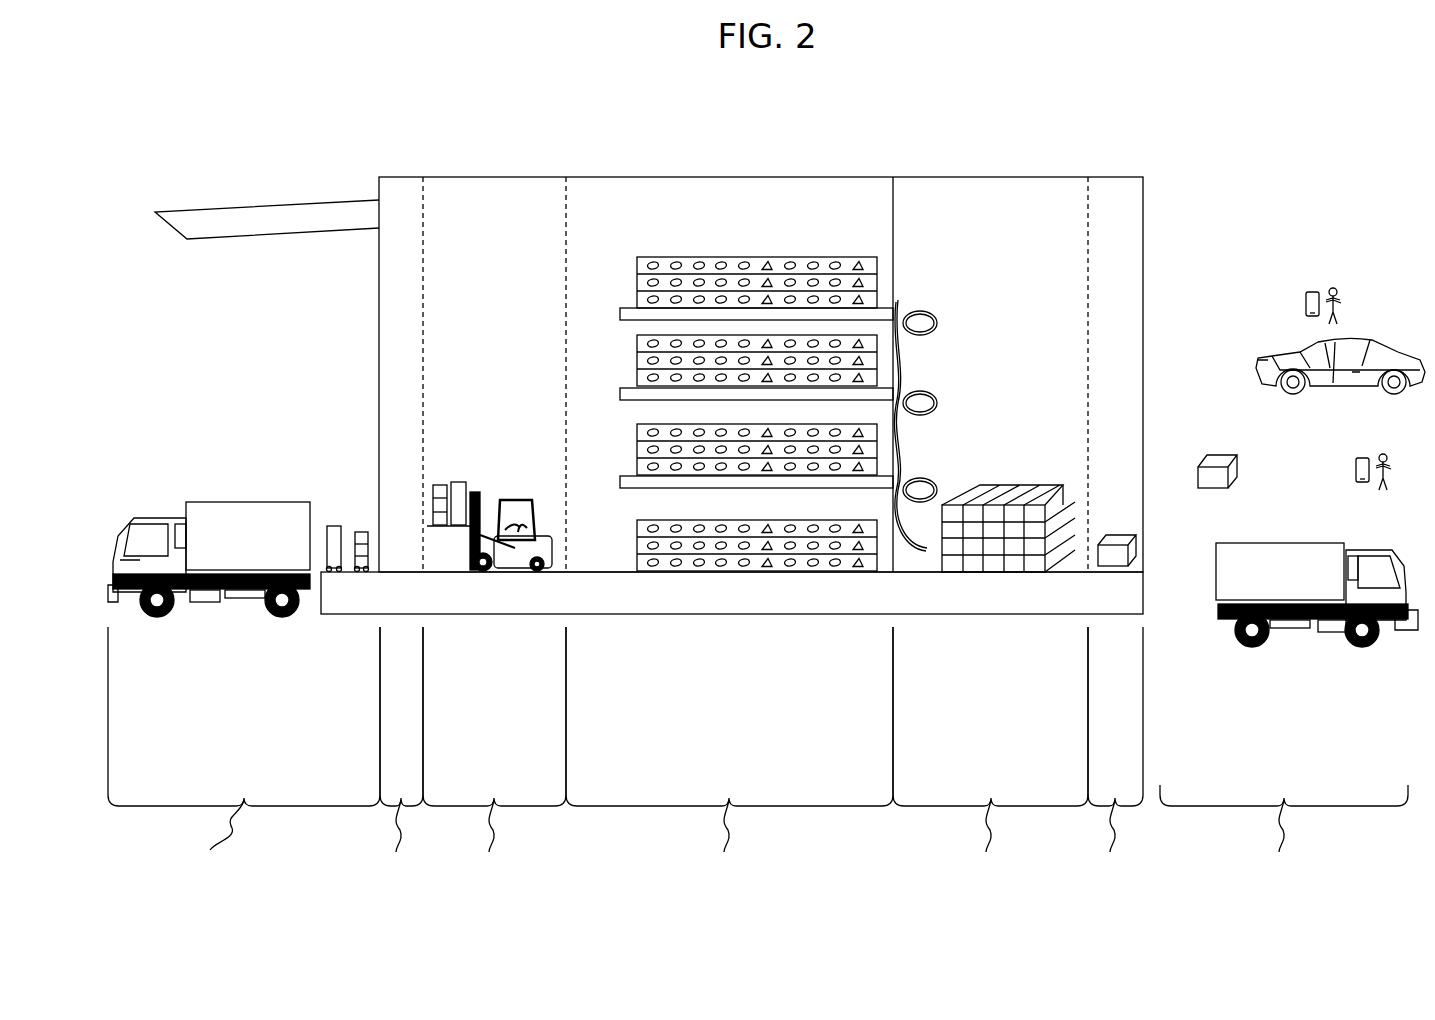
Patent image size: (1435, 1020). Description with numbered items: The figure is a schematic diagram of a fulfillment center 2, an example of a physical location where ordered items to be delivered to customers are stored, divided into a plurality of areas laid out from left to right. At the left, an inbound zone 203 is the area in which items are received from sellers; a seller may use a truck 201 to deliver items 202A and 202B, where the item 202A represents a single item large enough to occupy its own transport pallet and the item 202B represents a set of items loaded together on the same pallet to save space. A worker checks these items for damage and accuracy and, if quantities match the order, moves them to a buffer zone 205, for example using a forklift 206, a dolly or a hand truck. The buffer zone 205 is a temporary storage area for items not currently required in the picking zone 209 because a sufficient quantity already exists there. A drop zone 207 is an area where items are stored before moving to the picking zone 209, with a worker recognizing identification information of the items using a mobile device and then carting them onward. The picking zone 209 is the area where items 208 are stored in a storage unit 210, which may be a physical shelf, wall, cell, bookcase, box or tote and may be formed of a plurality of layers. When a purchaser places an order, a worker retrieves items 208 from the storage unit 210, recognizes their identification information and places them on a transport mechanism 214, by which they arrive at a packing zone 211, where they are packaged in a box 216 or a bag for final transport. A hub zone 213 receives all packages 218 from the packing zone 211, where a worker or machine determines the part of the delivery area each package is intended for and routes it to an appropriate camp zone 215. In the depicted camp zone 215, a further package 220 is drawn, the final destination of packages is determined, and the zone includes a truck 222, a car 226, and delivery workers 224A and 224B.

The fulfillment center 2 is at (908, 121).
The truck 201 is at (236, 500).
The item 202A is at (334, 525).
The item 202B is at (362, 530).
The inbound zone 203 is at (244, 767).
The buffer zone 205 is at (400, 779).
The forklift 206 is at (522, 496).
The drop zone 207 is at (494, 780).
The items 208 is at (722, 258).
The picking zone 209 is at (729, 767).
The storage unit 210 is at (826, 255).
The packing zone 211 is at (990, 767).
The hub zone 213 is at (1114, 779).
The transport mechanism 214 is at (934, 308).
The camp zone 215 is at (1284, 846).
The box 216 is at (1008, 484).
The packages 218 is at (1116, 532).
The package 220 is at (1212, 455).
The truck 222 is at (1281, 541).
The delivery worker 224A is at (1380, 496).
The delivery worker 224B is at (1342, 305).
The car 226 is at (1362, 336).